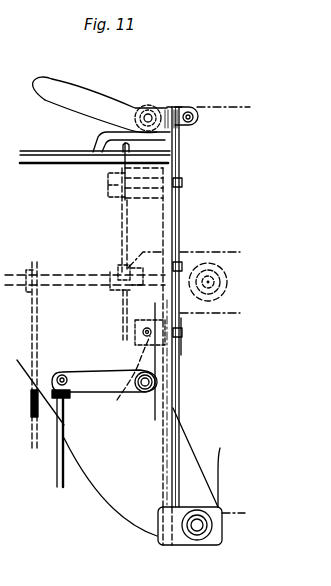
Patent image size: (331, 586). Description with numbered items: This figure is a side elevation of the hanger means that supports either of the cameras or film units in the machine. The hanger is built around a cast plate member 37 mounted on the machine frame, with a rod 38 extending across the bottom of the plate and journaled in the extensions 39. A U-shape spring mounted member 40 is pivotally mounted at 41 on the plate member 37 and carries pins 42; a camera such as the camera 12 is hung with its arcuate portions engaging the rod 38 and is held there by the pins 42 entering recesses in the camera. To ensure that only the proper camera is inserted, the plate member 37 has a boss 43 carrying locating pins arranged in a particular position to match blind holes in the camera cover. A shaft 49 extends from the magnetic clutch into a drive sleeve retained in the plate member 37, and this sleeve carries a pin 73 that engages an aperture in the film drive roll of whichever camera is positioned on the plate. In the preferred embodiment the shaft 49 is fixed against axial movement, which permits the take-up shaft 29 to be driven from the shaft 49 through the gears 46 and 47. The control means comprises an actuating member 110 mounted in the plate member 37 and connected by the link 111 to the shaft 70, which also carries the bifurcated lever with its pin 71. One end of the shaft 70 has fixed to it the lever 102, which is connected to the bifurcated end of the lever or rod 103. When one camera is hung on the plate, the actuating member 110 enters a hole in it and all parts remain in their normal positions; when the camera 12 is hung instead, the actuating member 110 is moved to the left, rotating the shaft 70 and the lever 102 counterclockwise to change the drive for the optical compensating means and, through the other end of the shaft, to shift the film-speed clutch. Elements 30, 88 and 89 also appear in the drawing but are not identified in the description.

The camera 12 is at (165, 303).
The take-up shaft 29 is at (107, 190).
The mounting bar 30 is at (182, 185).
The plate member 37 is at (157, 222).
The rod 38 is at (195, 532).
The extensions 39 is at (217, 534).
The U-shape spring mounted member 40 is at (82, 97).
The pivot 41 is at (152, 112).
The pins 42 is at (199, 114).
The boss 43 is at (178, 345).
The gear 46 is at (120, 215).
The gear 47 is at (118, 312).
The shaft 49 is at (72, 271).
The shaft 70 is at (157, 392).
The pin 71 is at (183, 333).
The pin 73 is at (180, 262).
The rod 88 is at (33, 262).
The rod 89 is at (30, 407).
The lever 102 is at (93, 384).
The rod 103 is at (62, 457).
The actuating member 110 is at (135, 335).
The link 111 is at (125, 378).